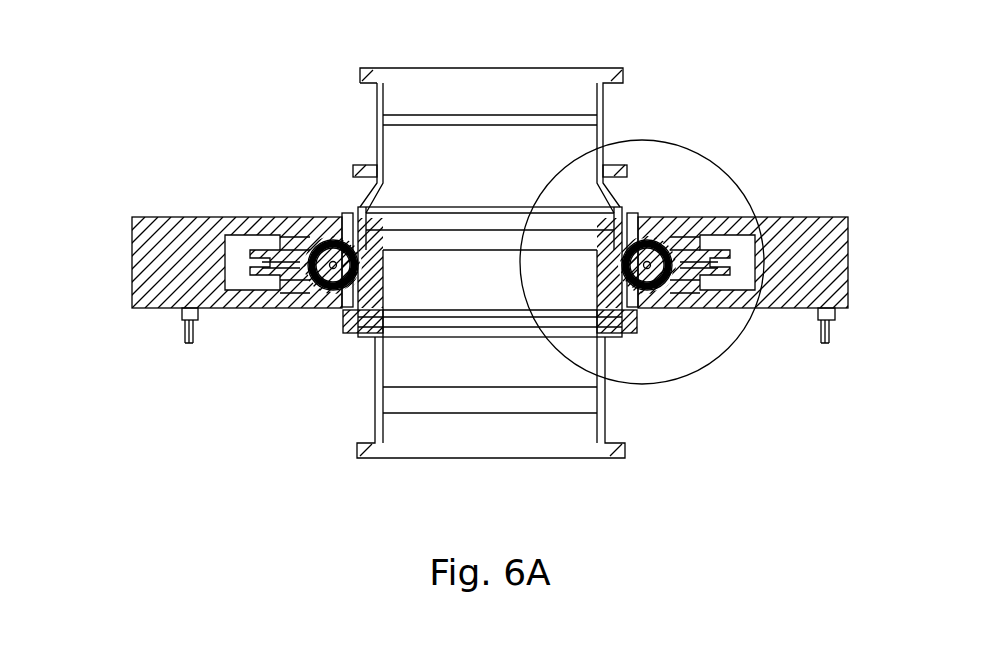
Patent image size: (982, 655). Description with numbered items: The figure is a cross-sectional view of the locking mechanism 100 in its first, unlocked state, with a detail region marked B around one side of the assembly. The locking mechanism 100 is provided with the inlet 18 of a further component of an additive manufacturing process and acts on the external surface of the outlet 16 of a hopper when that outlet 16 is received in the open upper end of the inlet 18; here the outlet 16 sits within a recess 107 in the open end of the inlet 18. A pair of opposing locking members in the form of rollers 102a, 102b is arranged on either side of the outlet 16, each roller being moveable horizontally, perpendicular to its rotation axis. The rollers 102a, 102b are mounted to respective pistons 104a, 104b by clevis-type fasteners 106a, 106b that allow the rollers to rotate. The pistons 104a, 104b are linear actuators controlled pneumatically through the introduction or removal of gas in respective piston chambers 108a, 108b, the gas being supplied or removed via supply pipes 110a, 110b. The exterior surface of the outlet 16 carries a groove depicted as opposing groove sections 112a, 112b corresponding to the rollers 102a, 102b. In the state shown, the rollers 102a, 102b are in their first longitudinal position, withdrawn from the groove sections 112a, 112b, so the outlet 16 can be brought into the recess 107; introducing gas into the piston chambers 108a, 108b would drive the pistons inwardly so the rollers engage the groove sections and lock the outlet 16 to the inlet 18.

The locking mechanism 100 is at (168, 162).
The outlet 16 is at (377, 125).
The inlet 18 is at (375, 390).
The recess 107 is at (620, 337).
The piston 104a is at (732, 237).
The piston 104b is at (270, 252).
The clevis-type fastener 106a is at (665, 245).
The clevis-type fastener 106b is at (315, 237).
The piston chamber 108a is at (745, 282).
The piston chamber 108b is at (237, 260).
The supply pipe 110a is at (825, 344).
The supply pipe 110b is at (180, 335).
The groove section 112a is at (641, 218).
The groove section 112b is at (355, 318).
The roller 102a is at (662, 300).
The roller 102b is at (303, 310).
The detail circle B is at (730, 167).